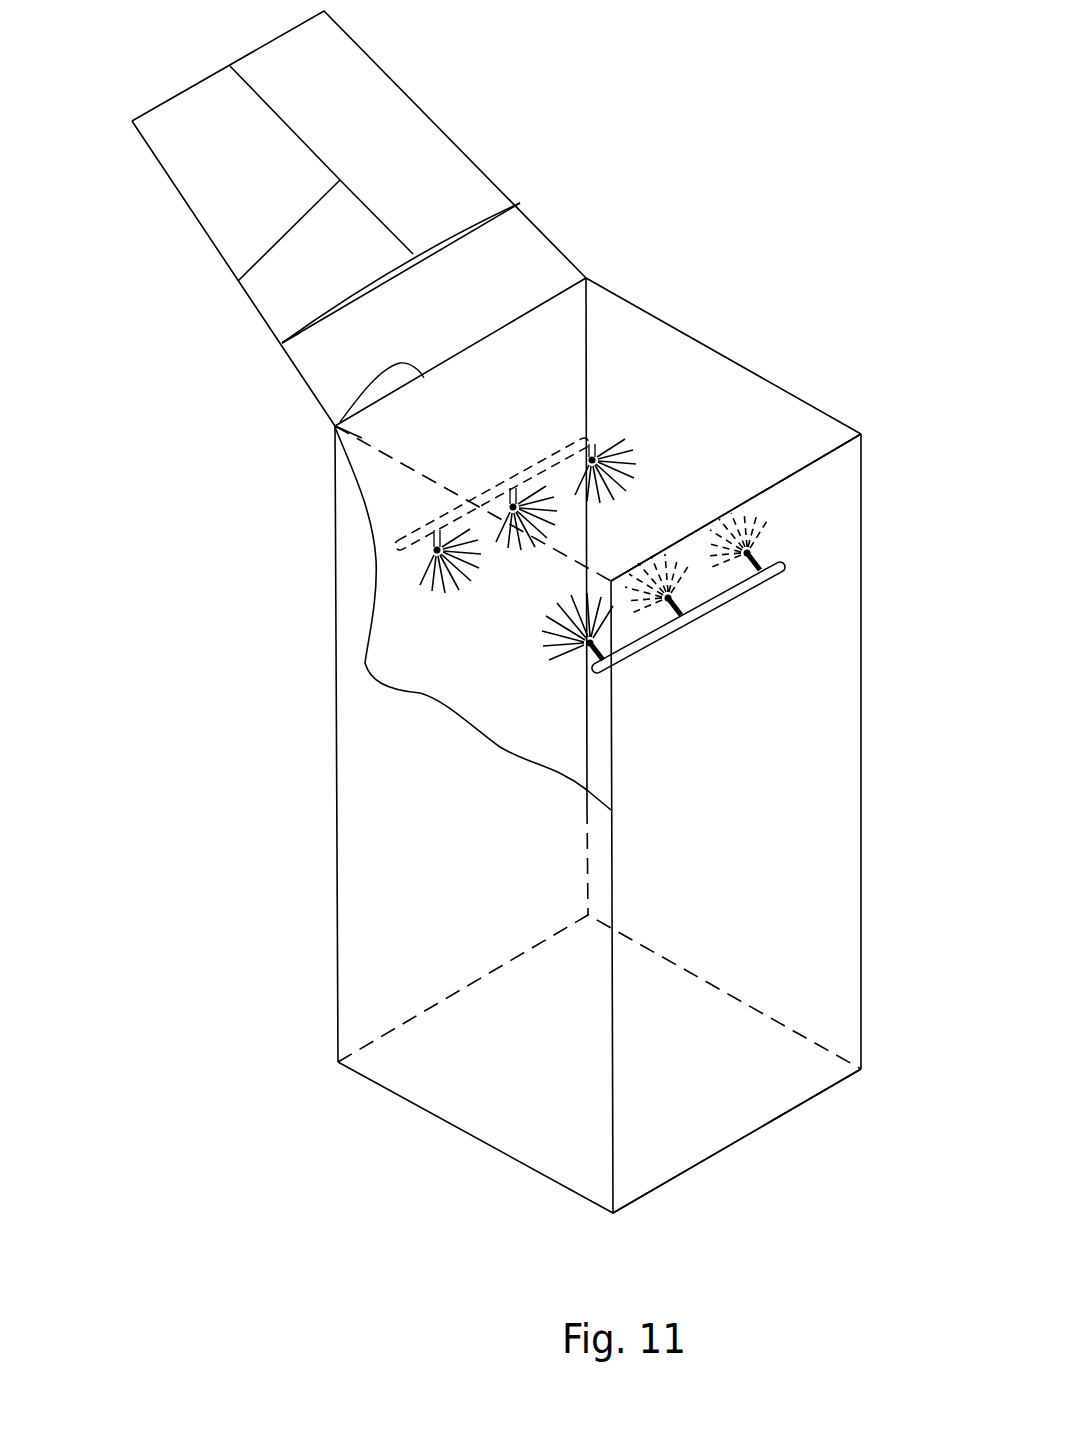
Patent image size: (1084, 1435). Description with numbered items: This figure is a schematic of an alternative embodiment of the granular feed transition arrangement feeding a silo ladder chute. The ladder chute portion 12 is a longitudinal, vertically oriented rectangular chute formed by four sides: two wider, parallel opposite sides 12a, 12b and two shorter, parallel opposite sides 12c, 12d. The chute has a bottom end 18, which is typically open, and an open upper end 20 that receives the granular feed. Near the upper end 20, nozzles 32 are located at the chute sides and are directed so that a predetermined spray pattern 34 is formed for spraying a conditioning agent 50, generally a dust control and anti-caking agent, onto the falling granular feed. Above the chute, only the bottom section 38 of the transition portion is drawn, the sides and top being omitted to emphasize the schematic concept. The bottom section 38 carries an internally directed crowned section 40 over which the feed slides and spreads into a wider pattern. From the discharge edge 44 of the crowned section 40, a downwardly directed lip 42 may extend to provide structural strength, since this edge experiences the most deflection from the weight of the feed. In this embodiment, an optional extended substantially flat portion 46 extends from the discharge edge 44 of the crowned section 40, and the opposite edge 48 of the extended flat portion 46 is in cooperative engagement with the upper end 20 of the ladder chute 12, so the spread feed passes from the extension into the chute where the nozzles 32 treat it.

The ladder chute portion 12 is at (340, 1007).
The wider side 12a is at (712, 768).
The wider side 12b is at (450, 409).
The shorter side 12c is at (699, 441).
The shorter side 12d is at (474, 1041).
The bottom end 18 is at (698, 1163).
The open upper end 20 is at (793, 447).
The nozzle 32 is at (593, 457).
The spray pattern 34 is at (456, 570).
The bottom section 38 is at (182, 197).
The crowned section 40 is at (239, 281).
The downwardly directed lip 42 is at (423, 252).
The discharge edge 44 is at (465, 223).
The extended flat portion 46 is at (347, 355).
The opposite edge 48 is at (333, 422).
The conditioning agent 50 is at (432, 552).